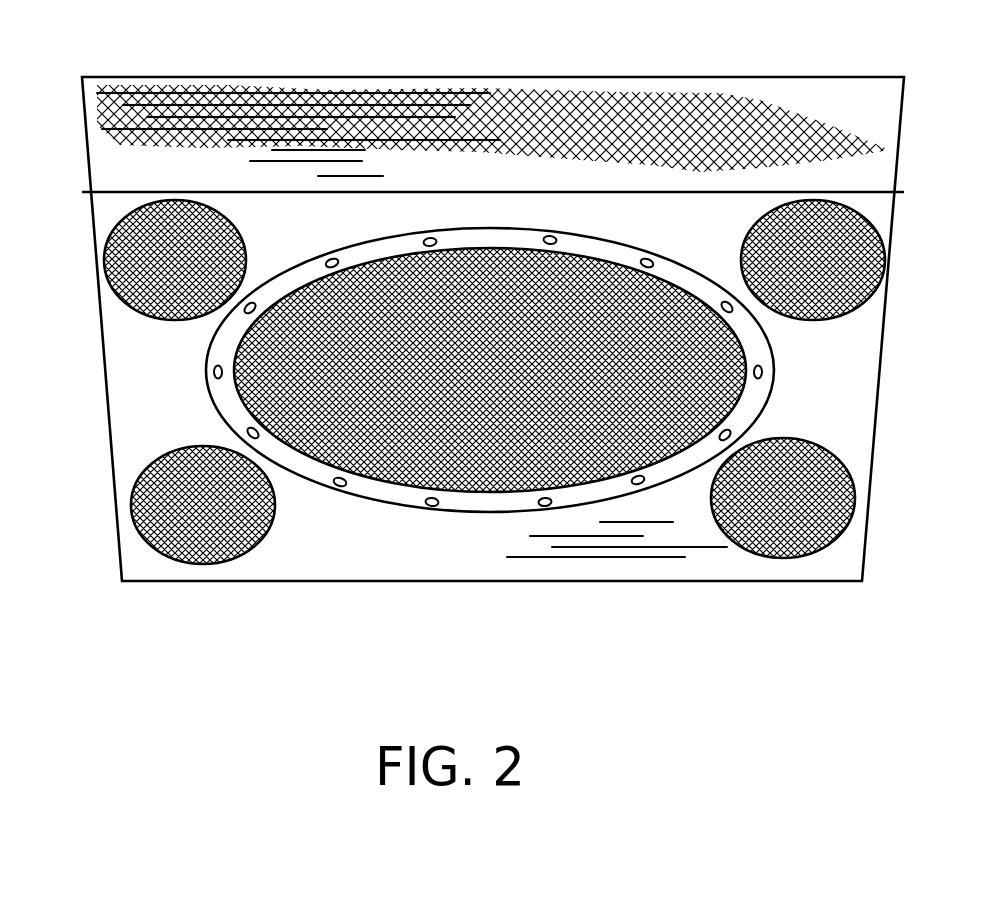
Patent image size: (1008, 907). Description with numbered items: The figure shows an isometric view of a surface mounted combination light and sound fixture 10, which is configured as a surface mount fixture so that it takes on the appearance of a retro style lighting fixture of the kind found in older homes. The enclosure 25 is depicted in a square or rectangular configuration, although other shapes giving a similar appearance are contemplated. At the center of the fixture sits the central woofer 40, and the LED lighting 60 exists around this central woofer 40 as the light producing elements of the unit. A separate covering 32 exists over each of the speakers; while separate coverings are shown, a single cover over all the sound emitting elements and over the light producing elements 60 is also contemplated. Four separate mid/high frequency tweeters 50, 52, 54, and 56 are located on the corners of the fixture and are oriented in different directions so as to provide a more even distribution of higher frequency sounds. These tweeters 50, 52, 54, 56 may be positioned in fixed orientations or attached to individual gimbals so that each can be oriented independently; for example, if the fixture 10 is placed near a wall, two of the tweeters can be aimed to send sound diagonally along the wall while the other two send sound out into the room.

The surface mounted combination light and sound fixture 10 is at (533, 621).
The enclosure 25 is at (440, 77).
The covering 32 is at (575, 485).
The central woofer 40 is at (442, 322).
The mid/high frequency tweeter 50 is at (195, 543).
The mid/high frequency tweeter 52 is at (790, 525).
The mid/high frequency tweeter 54 is at (128, 278).
The mid/high frequency tweeter 56 is at (798, 215).
The LED lighting 60 is at (545, 506).